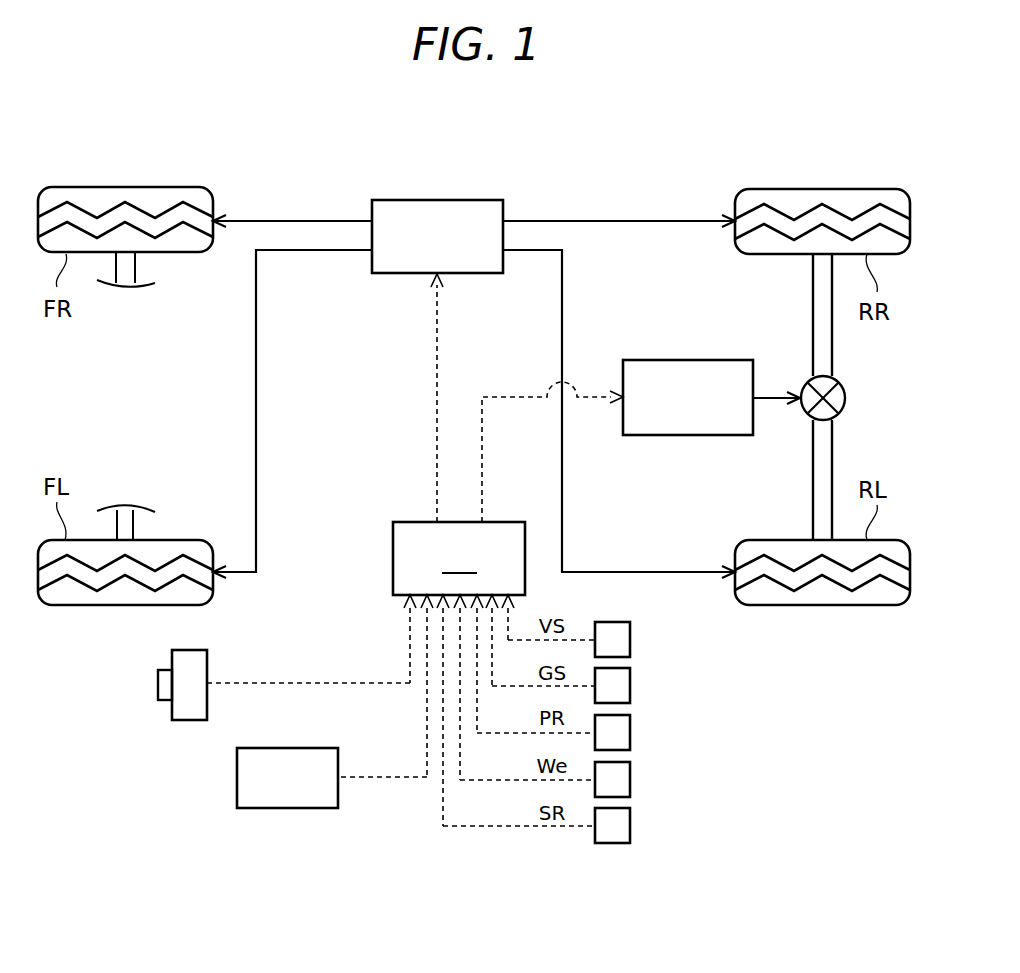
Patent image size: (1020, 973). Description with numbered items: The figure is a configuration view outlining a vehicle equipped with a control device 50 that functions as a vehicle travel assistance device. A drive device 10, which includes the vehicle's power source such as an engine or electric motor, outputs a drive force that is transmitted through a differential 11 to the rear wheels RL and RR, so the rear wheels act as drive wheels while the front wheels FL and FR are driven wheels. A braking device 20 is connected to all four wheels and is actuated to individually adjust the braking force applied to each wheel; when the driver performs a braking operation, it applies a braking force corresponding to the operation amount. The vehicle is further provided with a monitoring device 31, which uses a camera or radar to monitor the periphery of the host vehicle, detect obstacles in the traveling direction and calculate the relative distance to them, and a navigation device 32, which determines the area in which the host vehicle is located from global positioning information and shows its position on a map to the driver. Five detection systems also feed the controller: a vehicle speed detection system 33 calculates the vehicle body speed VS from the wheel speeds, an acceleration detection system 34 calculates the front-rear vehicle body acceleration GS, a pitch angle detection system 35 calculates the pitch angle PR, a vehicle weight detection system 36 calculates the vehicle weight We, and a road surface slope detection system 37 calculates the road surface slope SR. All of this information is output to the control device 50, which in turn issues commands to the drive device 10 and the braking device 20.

The drive device 10 is at (687, 436).
The differential 11 is at (846, 397).
The braking device 20 is at (467, 199).
The control device 50 is at (459, 558).
The monitoring device 31 is at (172, 707).
The navigation device 32 is at (237, 777).
The vehicle speed detection system 33 is at (630, 640).
The acceleration detection system 34 is at (630, 686).
The pitch angle detection system 35 is at (630, 733).
The vehicle weight detection system 36 is at (630, 780).
The road surface slope detection system 37 is at (630, 826).